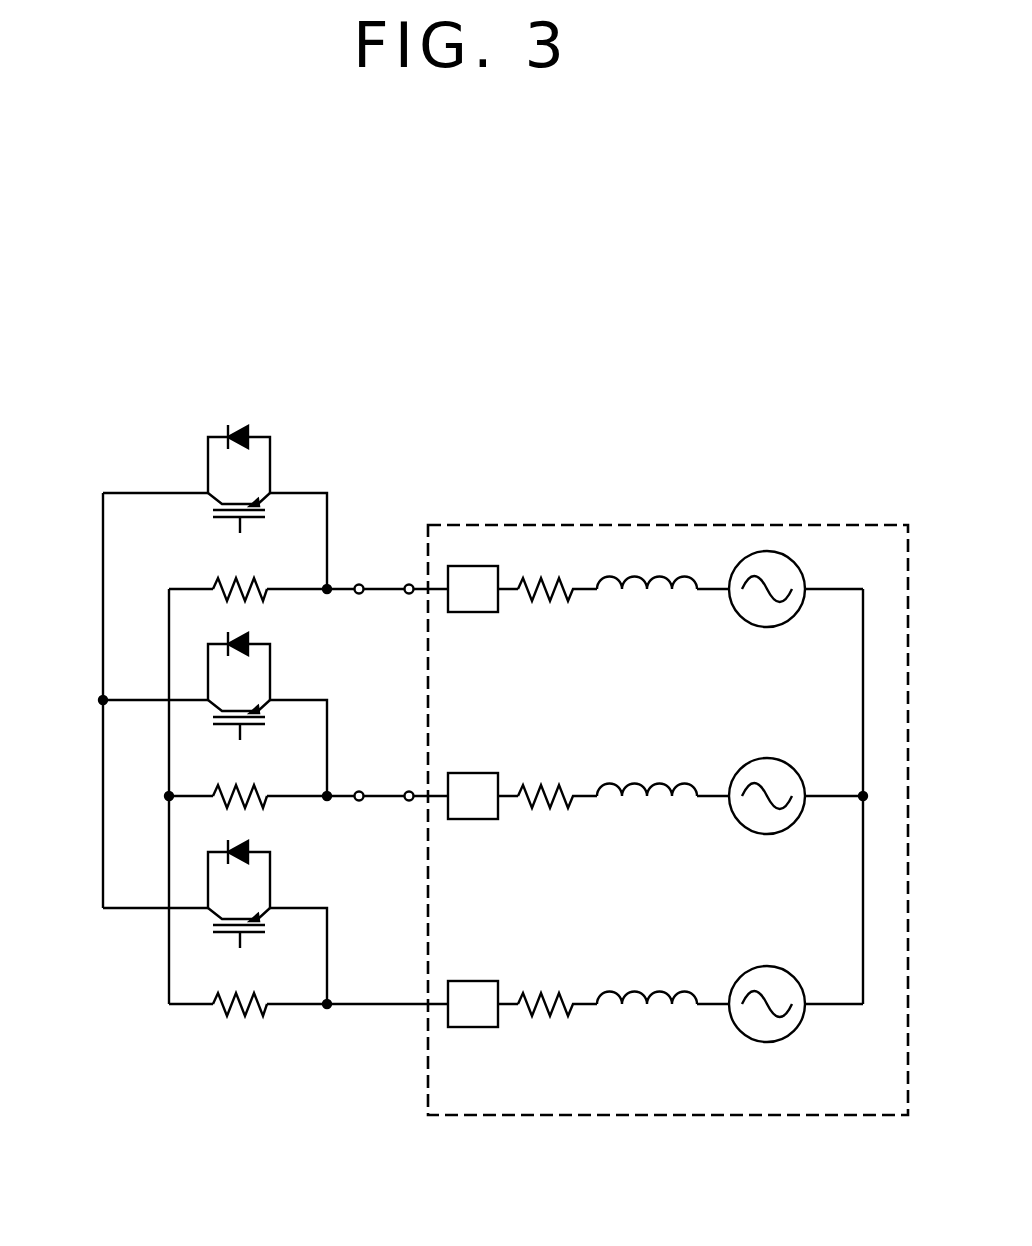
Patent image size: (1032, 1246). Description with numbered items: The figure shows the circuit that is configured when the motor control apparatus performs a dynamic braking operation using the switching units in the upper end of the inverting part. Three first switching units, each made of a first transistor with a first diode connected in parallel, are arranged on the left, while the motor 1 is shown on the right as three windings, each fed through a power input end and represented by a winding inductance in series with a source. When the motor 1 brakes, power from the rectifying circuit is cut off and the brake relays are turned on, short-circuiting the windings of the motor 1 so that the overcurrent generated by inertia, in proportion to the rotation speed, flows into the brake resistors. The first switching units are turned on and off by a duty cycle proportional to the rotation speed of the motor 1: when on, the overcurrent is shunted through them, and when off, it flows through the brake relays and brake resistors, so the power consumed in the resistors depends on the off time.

The motor 1 is at (750, 525).